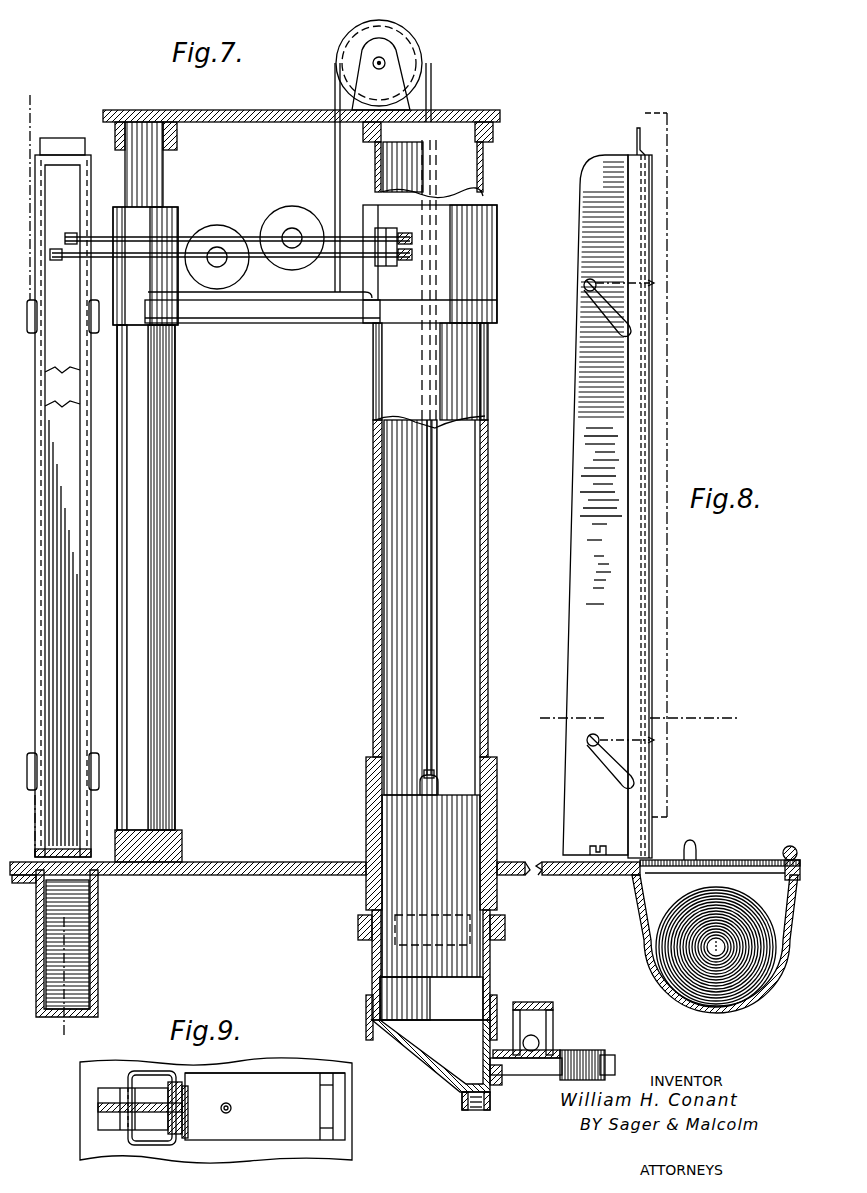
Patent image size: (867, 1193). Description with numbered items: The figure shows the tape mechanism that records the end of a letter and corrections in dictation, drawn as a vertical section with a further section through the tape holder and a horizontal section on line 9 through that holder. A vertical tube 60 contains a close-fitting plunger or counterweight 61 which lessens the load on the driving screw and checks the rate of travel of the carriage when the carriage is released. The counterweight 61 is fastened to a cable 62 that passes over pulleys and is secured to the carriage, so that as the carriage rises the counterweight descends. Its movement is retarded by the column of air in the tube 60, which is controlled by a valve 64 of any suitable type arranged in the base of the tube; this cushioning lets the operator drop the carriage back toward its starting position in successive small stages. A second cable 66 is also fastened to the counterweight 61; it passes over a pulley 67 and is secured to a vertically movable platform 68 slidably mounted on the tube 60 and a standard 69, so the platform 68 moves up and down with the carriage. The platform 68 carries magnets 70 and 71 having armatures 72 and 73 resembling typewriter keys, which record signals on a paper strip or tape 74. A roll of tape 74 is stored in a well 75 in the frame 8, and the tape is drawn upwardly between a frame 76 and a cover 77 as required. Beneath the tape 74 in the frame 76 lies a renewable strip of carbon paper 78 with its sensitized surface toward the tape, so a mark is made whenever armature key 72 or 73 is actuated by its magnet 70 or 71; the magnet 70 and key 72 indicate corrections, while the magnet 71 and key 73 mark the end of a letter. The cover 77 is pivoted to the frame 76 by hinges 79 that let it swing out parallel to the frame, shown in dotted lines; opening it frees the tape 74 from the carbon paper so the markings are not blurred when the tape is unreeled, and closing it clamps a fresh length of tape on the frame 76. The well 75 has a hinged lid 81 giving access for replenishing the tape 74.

In FIG. 7, the frame 8 is at (48, 103).
In FIG. 8, the section line 9 is at (533, 703).
In FIG. 7, the vertical tube 60 is at (386, 515).
In FIG. 7, the plunger or counterweight 61 is at (392, 820).
In FIG. 7, the cable 62 is at (437, 557).
In FIG. 7, the valve 64 is at (548, 1045).
In FIG. 7, the second cable 66 is at (337, 160).
In FIG. 7, the pulley 67 is at (354, 66).
In FIG. 7, the vertically movable platform 68 is at (301, 312).
In FIG. 7, the standard 69 is at (160, 576).
In FIG. 7, the magnet 70 is at (306, 212).
In FIG. 7, the magnet 71 is at (213, 232).
In FIG. 7, the armature key 72 is at (262, 234).
In FIG. 7, the armature key 73 is at (240, 258).
In FIG. 7, the paper strip or tape 74 is at (57, 450).
In FIG. 8, the paper strip or tape 74 is at (640, 614).
In FIG. 9, the paper strip or tape 74 is at (189, 1102).
In FIG. 7, the well 75 is at (98, 960).
In FIG. 8, the well 75 is at (651, 972).
In FIG. 8, the frame 76 is at (584, 440).
In FIG. 9, the frame 76 is at (98, 1107).
In FIG. 7, the cover 77 is at (43, 602).
In FIG. 8, the cover 77 is at (650, 601).
In FIG. 9, the cover 77 is at (190, 1126).
In FIG. 7, the strip of carbon paper 78 is at (56, 396).
In FIG. 7, the hinges 79 is at (30, 333).
In FIG. 8, the hinges 79 is at (615, 318).
In FIG. 9, the hinges 79 is at (138, 1072).
In FIG. 8, the hinged lid 81 is at (732, 860).
In FIG. 9, the hinged lid 81 is at (286, 1073).